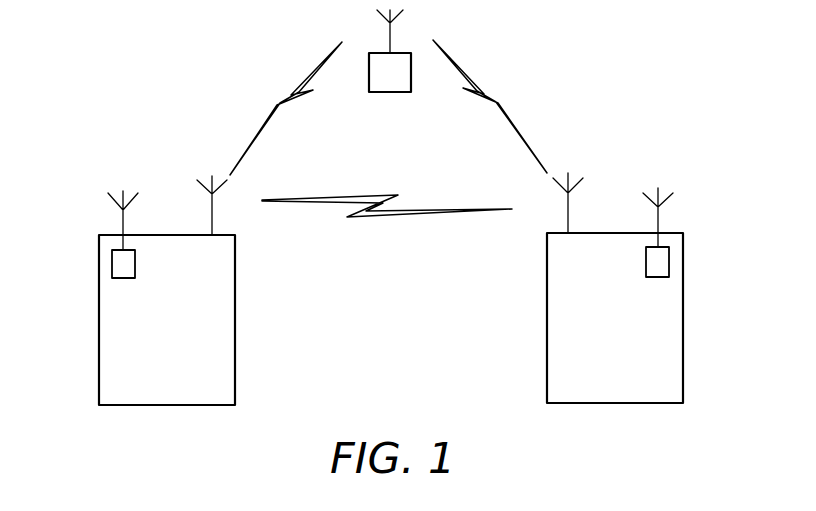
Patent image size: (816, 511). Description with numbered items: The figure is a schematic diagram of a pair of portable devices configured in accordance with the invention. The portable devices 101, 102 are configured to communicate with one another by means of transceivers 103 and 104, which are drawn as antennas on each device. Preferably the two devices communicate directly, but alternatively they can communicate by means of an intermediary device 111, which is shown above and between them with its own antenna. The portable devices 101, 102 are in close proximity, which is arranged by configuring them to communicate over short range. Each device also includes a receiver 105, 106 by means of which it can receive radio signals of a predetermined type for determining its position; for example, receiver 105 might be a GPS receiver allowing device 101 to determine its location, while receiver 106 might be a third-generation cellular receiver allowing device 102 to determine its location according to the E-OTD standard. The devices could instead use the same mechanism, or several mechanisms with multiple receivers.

The portable device 101 is at (235, 330).
The portable device 102 is at (547, 329).
The transceiver 103 is at (212, 213).
The transceiver 104 is at (568, 212).
The receiver 105 is at (112, 263).
The receiver 106 is at (669, 262).
The intermediary device 111 is at (370, 92).